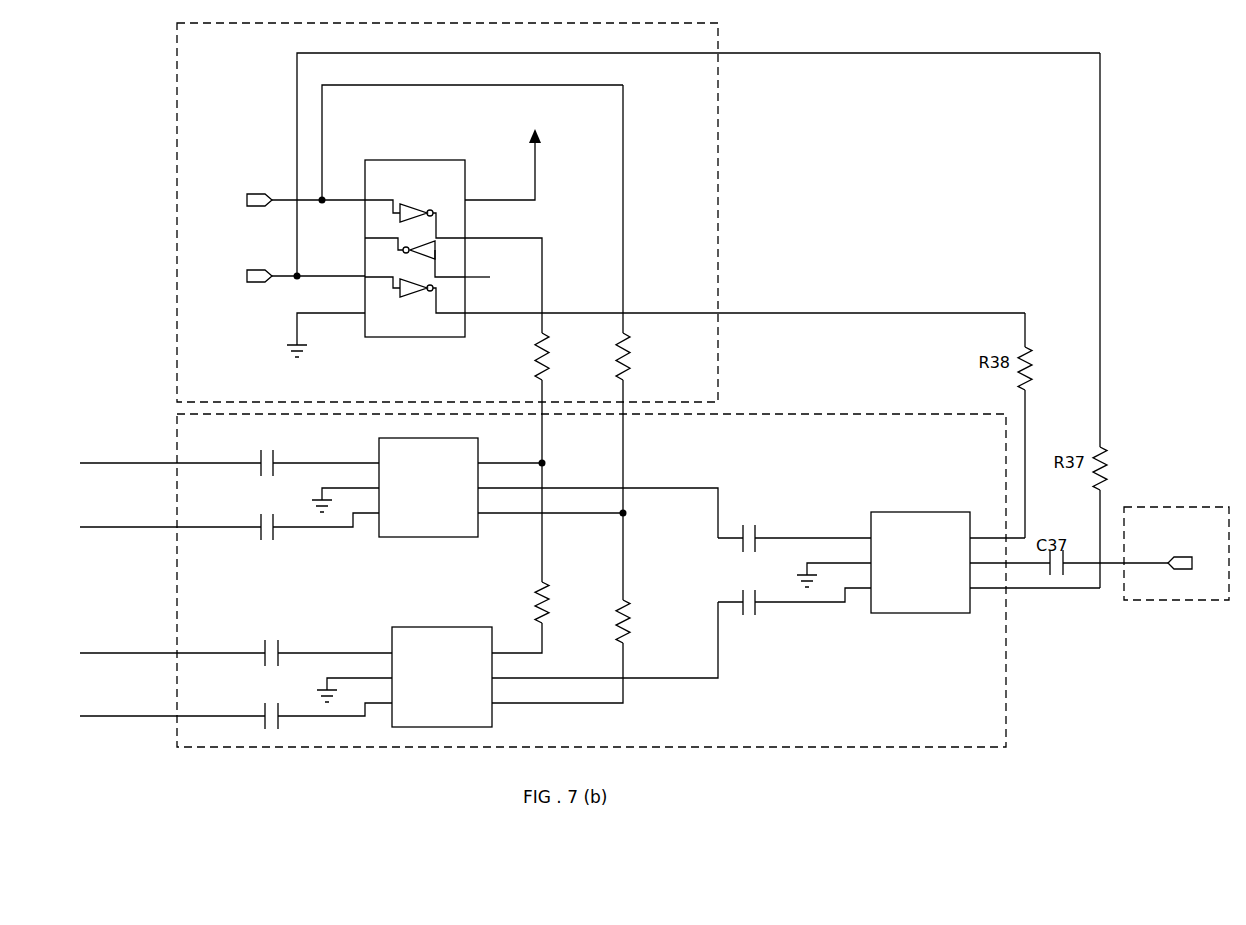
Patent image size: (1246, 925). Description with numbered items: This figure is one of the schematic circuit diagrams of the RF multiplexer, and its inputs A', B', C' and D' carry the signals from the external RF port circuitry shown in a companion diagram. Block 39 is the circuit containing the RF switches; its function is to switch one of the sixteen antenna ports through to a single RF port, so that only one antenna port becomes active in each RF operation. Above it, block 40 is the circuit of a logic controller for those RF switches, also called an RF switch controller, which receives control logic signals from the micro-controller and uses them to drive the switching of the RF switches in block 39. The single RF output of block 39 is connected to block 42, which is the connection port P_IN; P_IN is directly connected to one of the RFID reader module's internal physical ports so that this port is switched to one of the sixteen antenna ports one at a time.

The logic controller circuit block 40 is at (177, 165).
The RF switch circuit block 39 is at (177, 438).
The connection port block 42 is at (1180, 600).